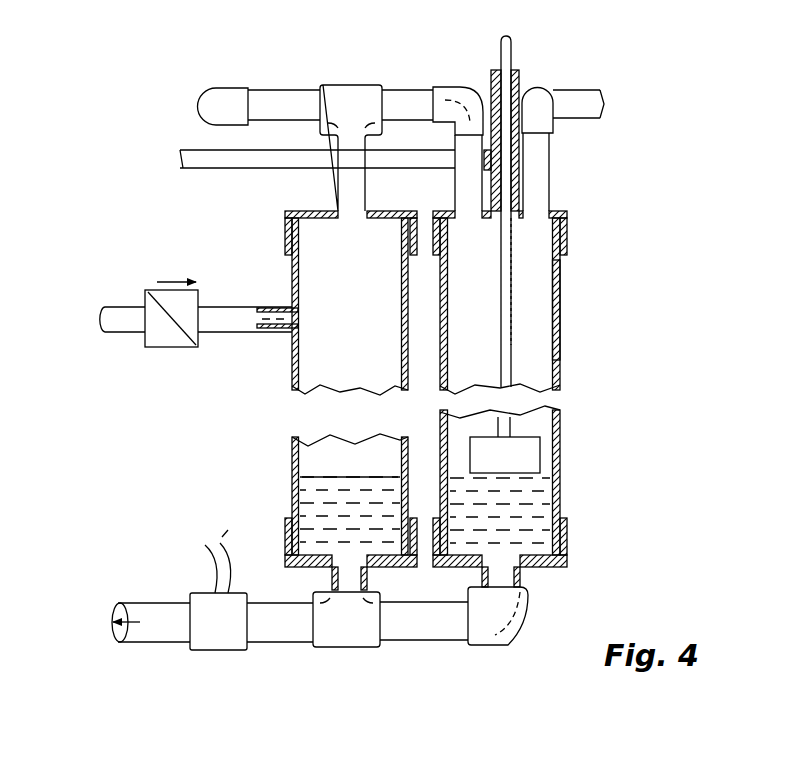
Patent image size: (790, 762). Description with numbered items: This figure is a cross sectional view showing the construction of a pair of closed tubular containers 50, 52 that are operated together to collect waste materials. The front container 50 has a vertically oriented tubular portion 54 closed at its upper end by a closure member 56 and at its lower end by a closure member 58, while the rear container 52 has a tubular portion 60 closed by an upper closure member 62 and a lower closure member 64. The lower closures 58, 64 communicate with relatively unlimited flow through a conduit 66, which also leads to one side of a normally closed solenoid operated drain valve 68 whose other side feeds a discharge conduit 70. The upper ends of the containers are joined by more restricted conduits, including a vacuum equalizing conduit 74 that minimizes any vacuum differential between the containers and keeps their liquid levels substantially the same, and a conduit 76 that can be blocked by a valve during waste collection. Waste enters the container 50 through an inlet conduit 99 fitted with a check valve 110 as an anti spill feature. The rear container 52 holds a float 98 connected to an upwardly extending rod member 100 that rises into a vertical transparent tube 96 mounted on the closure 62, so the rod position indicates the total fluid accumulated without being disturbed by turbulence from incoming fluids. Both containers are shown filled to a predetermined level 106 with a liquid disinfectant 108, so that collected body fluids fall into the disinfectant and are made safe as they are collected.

The container 50 is at (289, 369).
The container 52 is at (564, 361).
The tubular portion 54 is at (285, 345).
The closure member 56 is at (285, 225).
The closure member 58 is at (285, 528).
The tubular portion 60 is at (568, 328).
The closure member 62 is at (567, 238).
The closure member 64 is at (567, 540).
The conduit 66 is at (433, 622).
The drain valve 68 is at (210, 610).
The discharge conduit 70 is at (155, 645).
The vacuum equalizing conduit 74 is at (417, 150).
The conduit 76 is at (396, 90).
The transparent tube 96 is at (515, 153).
The float 98 is at (527, 450).
The inlet conduit 99 is at (283, 305).
The rod member 100 is at (512, 280).
The predetermined level 106 is at (352, 472).
The liquid disinfectant 108 is at (320, 500).
The check valve 110 is at (168, 335).